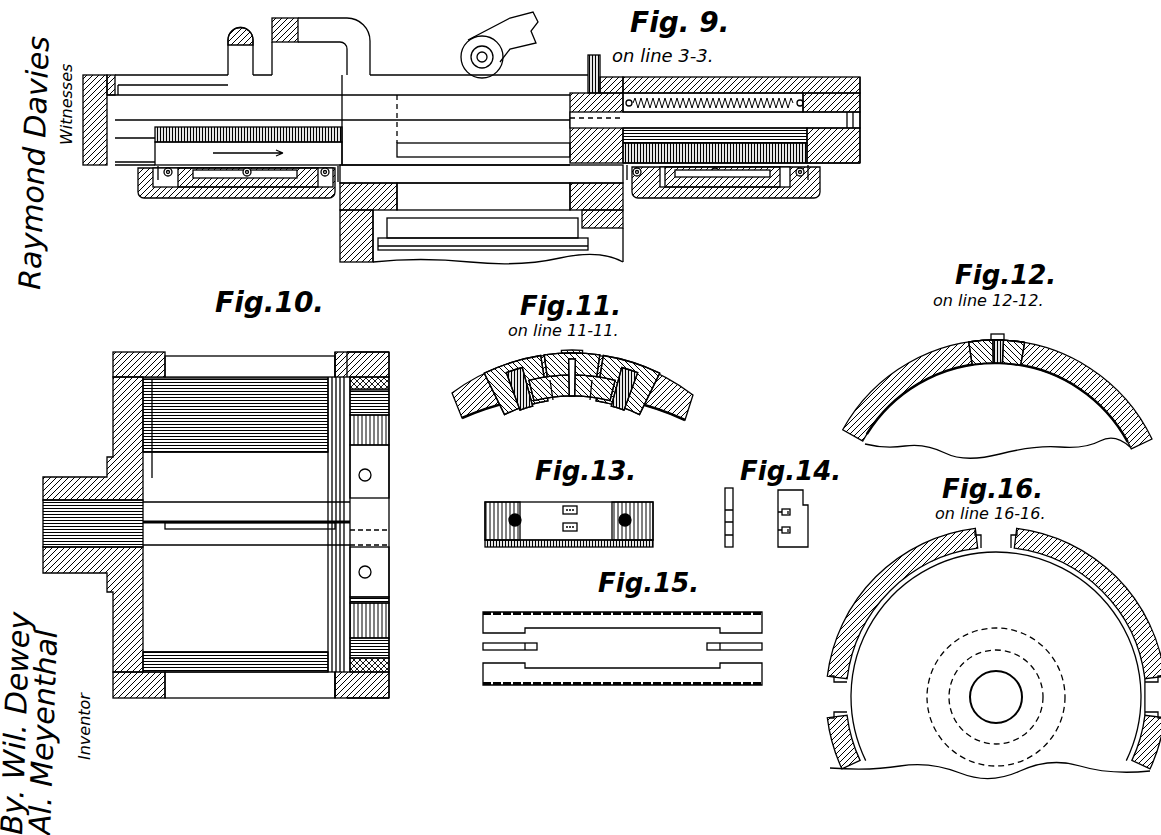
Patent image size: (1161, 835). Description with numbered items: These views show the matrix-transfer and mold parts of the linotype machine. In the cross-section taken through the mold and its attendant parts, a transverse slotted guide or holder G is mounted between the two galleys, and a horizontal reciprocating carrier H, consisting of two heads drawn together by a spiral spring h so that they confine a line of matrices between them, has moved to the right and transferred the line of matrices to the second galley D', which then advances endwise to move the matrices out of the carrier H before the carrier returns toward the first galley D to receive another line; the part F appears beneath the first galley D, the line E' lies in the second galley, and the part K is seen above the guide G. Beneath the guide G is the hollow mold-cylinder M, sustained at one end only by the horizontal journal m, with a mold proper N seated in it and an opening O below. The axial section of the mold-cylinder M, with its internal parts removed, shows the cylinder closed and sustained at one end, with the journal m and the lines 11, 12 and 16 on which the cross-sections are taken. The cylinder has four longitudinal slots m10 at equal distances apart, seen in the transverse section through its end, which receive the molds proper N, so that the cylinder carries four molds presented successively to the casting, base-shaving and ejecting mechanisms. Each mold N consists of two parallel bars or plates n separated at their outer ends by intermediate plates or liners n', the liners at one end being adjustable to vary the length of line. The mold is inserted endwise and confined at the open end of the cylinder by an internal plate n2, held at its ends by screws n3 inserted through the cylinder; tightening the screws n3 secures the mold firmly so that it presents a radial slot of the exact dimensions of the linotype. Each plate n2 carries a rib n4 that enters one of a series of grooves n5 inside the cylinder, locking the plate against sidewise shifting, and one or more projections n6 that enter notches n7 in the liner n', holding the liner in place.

In FIG. 9, the coil D is at (248, 130).
In FIG. 9, the second galley D' is at (722, 193).
In FIG. 9, the bracket E' is at (723, 191).
In FIG. 9, the bracket F is at (238, 192).
In FIG. 9, the transverse guide or holder G is at (479, 60).
In FIG. 9, the roller cam K is at (506, 22).
In FIG. 9, the horizontal reciprocating carrier H is at (893, 152).
In FIG. 9, the spiral spring h is at (790, 90).
In FIG. 9, the mold proper N is at (481, 205).
In FIG. 10, the mold proper N is at (250, 354).
In FIG. 11, the mold proper N is at (573, 355).
In FIG. 12, the mold proper N is at (1000, 365).
In FIG. 9, the plate cavity O is at (483, 234).
In FIG. 9, the mold-cylinder M is at (468, 258).
In FIG. 10, the mold-cylinder M is at (239, 538).
In FIG. 11, the mold-cylinder M is at (683, 398).
In FIG. 12, the mold-cylinder M is at (997, 399).
In FIG. 16, the mold-cylinder M is at (990, 665).
In FIG. 10, the horizontal journal m is at (78, 523).
In FIG. 16, the longitudinal slots m10 is at (983, 621).
In FIG. 10, the parallel bars or plates n is at (266, 613).
In FIG. 11, the parallel bars or plates n is at (572, 398).
In FIG. 12, the parallel bars or plates n is at (997, 329).
In FIG. 15, the parallel bars or plates n is at (622, 648).
In FIG. 16, the parallel bars or plates n is at (1152, 697).
In FIG. 11, the liner n' is at (573, 390).
In FIG. 12, the liner n' is at (999, 335).
In FIG. 14, the liner n' is at (780, 517).
In FIG. 15, the liner n' is at (621, 643).
In FIG. 10, the internal plate n2 is at (389, 388).
In FIG. 11, the internal plate n2 is at (630, 412).
In FIG. 13, the internal plate n2 is at (653, 512).
In FIG. 11, the screws n3 is at (564, 377).
In FIG. 10, the rib n4 is at (389, 375).
In FIG. 13, the rib n4 is at (653, 538).
In FIG. 10, the grooves n5 is at (330, 592).
In FIG. 11, the grooves n5 is at (478, 418).
In FIG. 16, the grooves n5 is at (1090, 580).
In FIG. 10, the projections n6 is at (389, 357).
In FIG. 13, the projections n6 is at (585, 520).
In FIG. 14, the notches n7 is at (776, 532).
In FIG. 10, the section line 11 is at (370, 352).
In FIG. 10, the section line 12 is at (342, 352).
In FIG. 10, the section line 16 is at (148, 352).